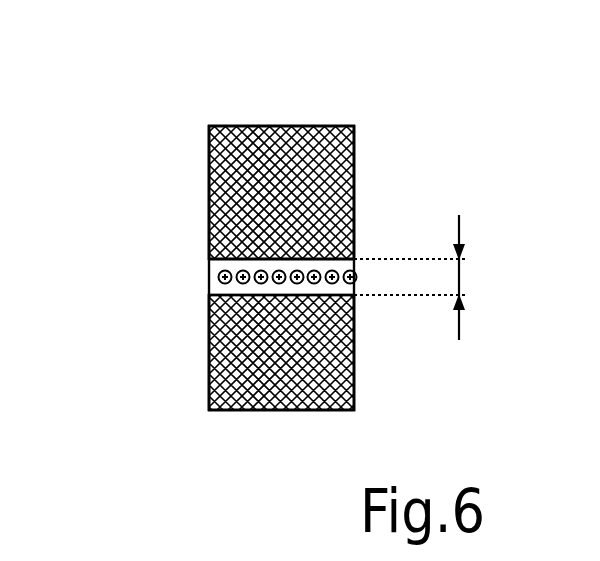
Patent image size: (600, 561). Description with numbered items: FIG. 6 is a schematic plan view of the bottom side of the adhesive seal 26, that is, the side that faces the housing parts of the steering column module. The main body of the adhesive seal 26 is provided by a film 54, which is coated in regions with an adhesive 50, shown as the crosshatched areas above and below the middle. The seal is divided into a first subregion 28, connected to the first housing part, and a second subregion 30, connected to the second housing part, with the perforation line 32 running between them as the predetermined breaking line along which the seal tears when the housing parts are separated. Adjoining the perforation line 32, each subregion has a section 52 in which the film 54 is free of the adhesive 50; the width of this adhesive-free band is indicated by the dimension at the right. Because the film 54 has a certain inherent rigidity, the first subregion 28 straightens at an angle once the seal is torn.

The adhesive seal 26 is at (153, 125).
The first subregion 28 is at (211, 208).
The second subregion 30 is at (352, 346).
The perforation line 32 is at (215, 280).
The adhesive 50 is at (338, 178).
The section free of adhesive 52 is at (459, 275).
The film 54 is at (222, 264).